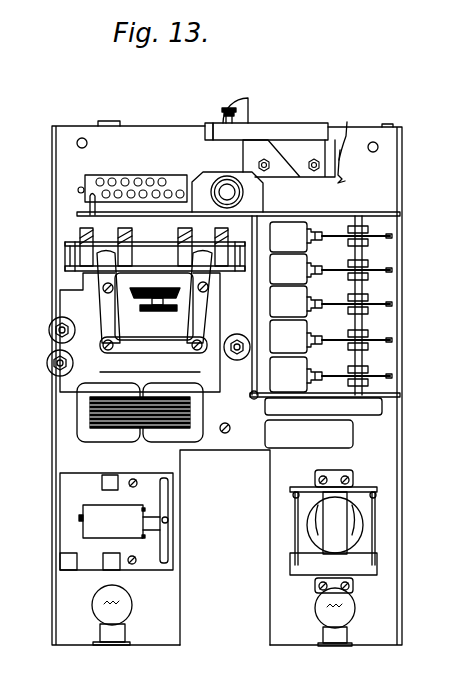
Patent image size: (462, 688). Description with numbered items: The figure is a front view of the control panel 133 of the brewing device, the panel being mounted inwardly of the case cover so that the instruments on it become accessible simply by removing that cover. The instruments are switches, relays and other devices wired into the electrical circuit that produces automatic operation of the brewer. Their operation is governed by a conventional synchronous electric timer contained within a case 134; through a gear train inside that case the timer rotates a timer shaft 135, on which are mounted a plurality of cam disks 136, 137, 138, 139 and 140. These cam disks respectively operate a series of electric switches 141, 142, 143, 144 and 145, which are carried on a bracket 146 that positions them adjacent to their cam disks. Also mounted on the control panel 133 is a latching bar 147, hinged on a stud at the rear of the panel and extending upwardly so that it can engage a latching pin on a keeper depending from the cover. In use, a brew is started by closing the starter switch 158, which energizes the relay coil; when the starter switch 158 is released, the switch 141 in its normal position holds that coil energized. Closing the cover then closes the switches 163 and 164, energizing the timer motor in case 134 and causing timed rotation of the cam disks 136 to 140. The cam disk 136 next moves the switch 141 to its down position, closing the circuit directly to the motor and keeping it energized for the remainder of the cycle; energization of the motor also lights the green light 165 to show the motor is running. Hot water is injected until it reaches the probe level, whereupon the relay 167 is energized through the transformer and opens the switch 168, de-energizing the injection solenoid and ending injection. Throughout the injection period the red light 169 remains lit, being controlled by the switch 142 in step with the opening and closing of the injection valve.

The control panel 133 is at (397, 460).
The case 134 is at (355, 438).
The timer shaft 135 is at (368, 358).
The cam disk 136 is at (385, 380).
The cam disk 137 is at (385, 339).
The cam disk 138 is at (385, 303).
The cam disk 139 is at (385, 268).
The cam disk 140 is at (385, 234).
The electric switch 141 is at (288, 374).
The electric switch 142 is at (288, 336).
The electric switch 143 is at (288, 301).
The electric switch 144 is at (288, 269).
The electric switch 145 is at (288, 237).
The bracket 146 is at (254, 388).
The latching bar 147 is at (249, 117).
The starter switch 158 is at (228, 186).
The switch 163 is at (346, 122).
The switch 164 is at (357, 135).
The green light 165 is at (350, 612).
The relay 167 is at (79, 313).
The switch 168 is at (92, 414).
The red light 169 is at (131, 608).